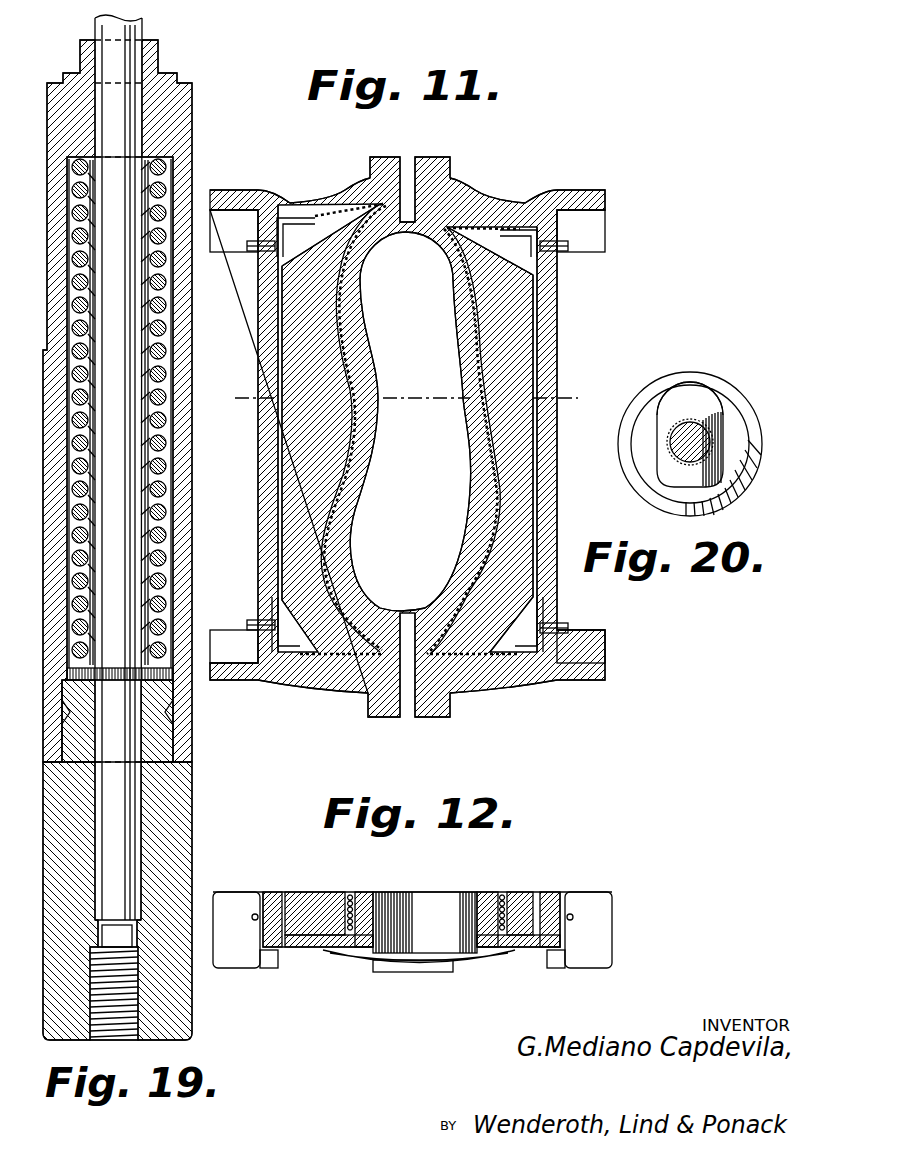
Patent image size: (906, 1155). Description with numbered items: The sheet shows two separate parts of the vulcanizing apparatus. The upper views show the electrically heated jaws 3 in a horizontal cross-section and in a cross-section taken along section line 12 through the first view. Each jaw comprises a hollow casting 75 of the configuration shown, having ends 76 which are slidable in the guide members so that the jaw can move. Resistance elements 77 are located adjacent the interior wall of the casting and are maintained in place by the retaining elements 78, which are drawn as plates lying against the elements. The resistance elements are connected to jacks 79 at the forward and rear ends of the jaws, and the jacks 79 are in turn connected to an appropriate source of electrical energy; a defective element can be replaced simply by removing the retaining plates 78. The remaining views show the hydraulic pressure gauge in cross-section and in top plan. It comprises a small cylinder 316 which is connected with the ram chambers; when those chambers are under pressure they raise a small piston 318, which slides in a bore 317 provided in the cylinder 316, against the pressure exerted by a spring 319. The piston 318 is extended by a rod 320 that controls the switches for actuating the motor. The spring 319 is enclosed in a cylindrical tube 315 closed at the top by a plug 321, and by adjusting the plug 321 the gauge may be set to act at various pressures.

In FIG. 12, the jaws 3 is at (360, 949).
In FIG. 11, the section line 12 is at (404, 397).
In FIG. 11, the hollow casting 75 is at (525, 208).
In FIG. 12, the hollow casting 75 is at (363, 903).
In FIG. 11, the ends 76 is at (386, 158).
In FIG. 11, the resistance elements 77 is at (488, 370).
In FIG. 11, the retaining elements 78 is at (318, 332).
In FIG. 11, the jacks 79 is at (256, 250).
In FIG. 19, the cylindrical tube 315 is at (188, 175).
In FIG. 19, the cylinder 316 is at (167, 828).
In FIG. 19, the bore 317 is at (137, 873).
In FIG. 19, the piston 318 is at (120, 790).
In FIG. 19, the spring 319 is at (128, 512).
In FIG. 20, the rod 320 is at (672, 438).
In FIG. 20, the plug 321 is at (713, 400).
In FIG. 19, the plug 321 is at (177, 100).